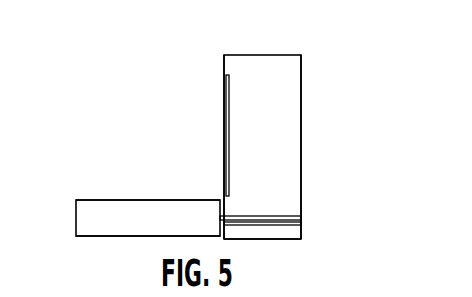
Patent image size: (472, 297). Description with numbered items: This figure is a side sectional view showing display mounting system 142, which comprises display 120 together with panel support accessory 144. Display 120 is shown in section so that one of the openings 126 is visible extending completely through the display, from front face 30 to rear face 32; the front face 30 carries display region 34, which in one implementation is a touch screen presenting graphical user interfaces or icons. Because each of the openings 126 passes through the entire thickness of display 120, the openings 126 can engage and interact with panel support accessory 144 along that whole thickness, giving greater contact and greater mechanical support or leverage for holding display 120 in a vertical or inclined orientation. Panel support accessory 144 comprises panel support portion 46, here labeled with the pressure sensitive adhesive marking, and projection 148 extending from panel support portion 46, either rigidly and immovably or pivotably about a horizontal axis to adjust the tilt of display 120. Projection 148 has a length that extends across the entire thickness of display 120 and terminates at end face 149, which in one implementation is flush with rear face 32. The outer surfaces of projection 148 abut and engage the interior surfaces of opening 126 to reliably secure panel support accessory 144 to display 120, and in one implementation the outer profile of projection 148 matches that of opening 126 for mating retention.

The display mounting system 142 is at (105, 139).
The panel support accessory 144 is at (88, 200).
The panel support portion 46 is at (100, 237).
The front face 30 is at (202, 81).
The display region 34 is at (224, 137).
The openings 126 is at (250, 216).
The display 120 is at (272, 55).
The rear face 32 is at (306, 117).
The end face 149 is at (302, 218).
The projection 148 is at (240, 226).